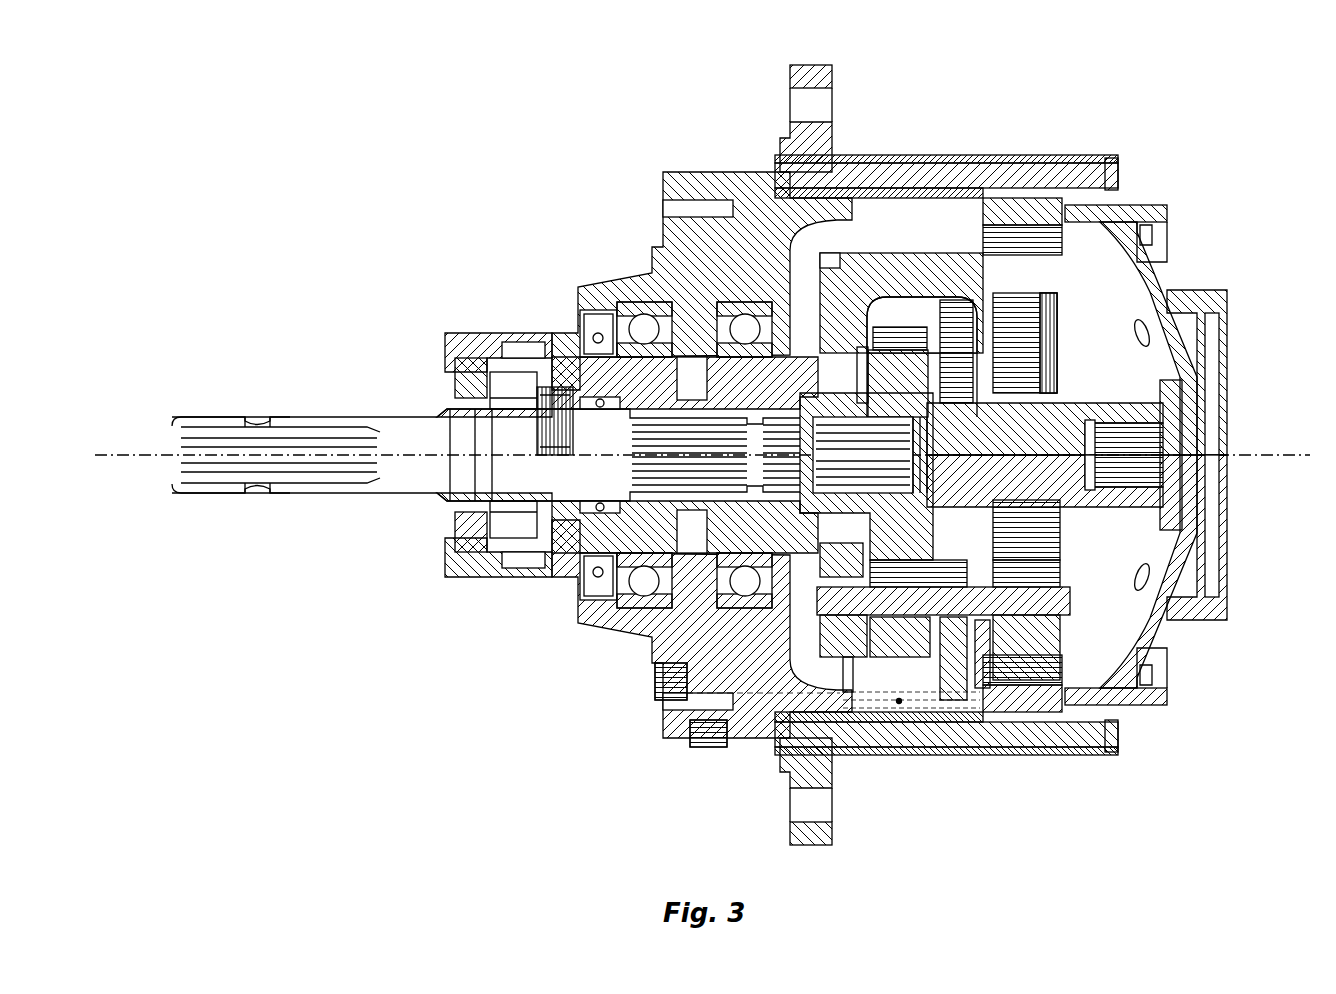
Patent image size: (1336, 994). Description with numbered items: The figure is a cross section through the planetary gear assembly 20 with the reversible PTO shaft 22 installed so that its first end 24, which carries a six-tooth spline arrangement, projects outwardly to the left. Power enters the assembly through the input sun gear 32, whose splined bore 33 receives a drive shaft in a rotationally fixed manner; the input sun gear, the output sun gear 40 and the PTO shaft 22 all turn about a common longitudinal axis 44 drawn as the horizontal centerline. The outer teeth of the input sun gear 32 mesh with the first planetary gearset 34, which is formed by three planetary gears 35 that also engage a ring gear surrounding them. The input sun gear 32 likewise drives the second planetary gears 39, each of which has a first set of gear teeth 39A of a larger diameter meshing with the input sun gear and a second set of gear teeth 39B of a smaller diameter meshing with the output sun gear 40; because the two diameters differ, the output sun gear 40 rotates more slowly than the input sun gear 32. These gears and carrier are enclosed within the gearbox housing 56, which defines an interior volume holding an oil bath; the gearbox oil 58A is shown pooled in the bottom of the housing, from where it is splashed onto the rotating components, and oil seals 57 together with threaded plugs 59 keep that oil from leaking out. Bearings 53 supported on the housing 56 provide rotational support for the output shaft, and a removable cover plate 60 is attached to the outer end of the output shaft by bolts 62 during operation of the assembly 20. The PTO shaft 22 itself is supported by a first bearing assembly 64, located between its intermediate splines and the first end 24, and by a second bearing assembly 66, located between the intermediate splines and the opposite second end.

The planetary gear assembly 20 is at (515, 128).
The PTO shaft 22 is at (405, 412).
The first end 24 is at (207, 497).
The input sun gear 32 is at (1142, 410).
The splined bore 33 is at (1150, 470).
The first planetary gearset 34 is at (1028, 190).
The planetary gears 35 is at (1008, 300).
The planetary gears 39 is at (950, 680).
The first set of gear teeth 39A is at (978, 682).
The second set of gear teeth 39B is at (848, 715).
The output sun gear 40 is at (905, 370).
The common longitudinal axis 44 is at (1304, 455).
The bearings 53 is at (690, 312).
The gearbox housing 56 is at (630, 628).
The oil seals 57 is at (578, 606).
The gearbox oil 58A is at (899, 705).
The threaded plugs 59 is at (653, 680).
The removable cover plate 60 is at (452, 392).
The bolts 62 is at (450, 570).
The first bearing assembly 64 is at (502, 380).
The second bearing assembly 66 is at (572, 388).